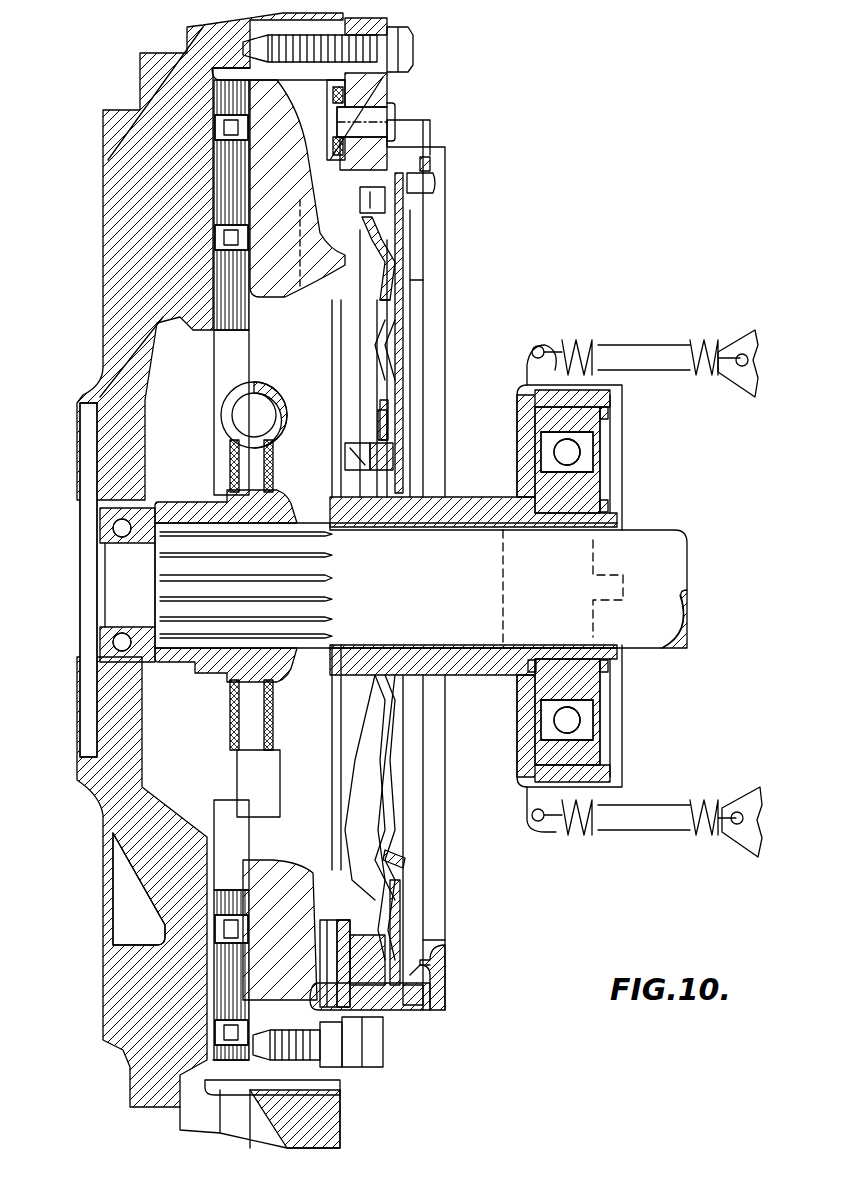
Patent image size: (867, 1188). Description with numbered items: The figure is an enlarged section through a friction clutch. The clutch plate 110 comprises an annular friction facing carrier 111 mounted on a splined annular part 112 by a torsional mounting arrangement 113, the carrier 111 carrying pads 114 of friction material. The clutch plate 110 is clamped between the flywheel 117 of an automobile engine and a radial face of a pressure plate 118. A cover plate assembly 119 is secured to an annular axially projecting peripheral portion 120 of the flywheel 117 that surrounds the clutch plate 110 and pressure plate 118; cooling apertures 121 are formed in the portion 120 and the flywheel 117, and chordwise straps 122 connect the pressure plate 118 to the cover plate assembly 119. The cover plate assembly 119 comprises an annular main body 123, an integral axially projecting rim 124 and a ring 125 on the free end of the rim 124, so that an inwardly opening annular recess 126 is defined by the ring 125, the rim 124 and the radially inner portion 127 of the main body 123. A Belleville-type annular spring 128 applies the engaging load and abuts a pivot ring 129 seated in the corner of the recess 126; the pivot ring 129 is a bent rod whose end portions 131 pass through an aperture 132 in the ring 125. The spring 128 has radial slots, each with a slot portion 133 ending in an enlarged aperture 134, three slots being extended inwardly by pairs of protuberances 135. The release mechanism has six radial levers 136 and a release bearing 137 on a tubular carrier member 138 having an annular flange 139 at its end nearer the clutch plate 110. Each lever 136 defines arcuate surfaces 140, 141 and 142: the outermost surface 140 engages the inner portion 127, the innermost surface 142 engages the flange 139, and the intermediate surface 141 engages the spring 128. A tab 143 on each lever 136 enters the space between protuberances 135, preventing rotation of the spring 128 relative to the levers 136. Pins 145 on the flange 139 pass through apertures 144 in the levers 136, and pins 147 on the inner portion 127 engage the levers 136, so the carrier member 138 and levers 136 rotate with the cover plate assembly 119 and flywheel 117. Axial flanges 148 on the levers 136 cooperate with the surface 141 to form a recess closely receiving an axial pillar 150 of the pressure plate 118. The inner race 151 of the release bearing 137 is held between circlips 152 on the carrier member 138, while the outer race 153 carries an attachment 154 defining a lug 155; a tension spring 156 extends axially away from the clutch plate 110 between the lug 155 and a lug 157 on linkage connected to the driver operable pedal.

The clutch plate 110 is at (204, 258).
The annular friction facing carrier 111 is at (225, 172).
The splined annular part 112 is at (220, 510).
The torsional mounting arrangement 113 is at (212, 420).
The pads of friction material 114 is at (240, 225).
The flywheel 117 is at (115, 452).
The pressure plate 118 is at (305, 290).
The cover plate assembly 119 is at (440, 1000).
The annular axially-projecting peripheral portion 120 is at (375, 1118).
The cooling apertures 121 is at (140, 838).
The straps 122 is at (355, 1068).
The annular main body 123 is at (370, 1105).
The annular rim 124 is at (395, 1010).
The ring 125 is at (430, 968).
The annular recess 126 is at (445, 942).
The radially inner portion 127 is at (360, 935).
The annular spring 128 is at (397, 895).
The pivot ring 129 is at (420, 992).
The end portions 131 is at (425, 185).
The aperture 132 is at (430, 165).
The slot portion 133 is at (400, 285).
The enlarged aperture 134 is at (420, 255).
The protuberances 135 is at (410, 305).
The levers 136 is at (390, 425).
The release bearing 137 is at (626, 464).
The tubular carrier member 138 is at (480, 670).
The annular flange 139 is at (347, 456).
The radially outermost arcuate surface 140 is at (380, 230).
The intermediate arcuate surface 141 is at (415, 295).
The radially innermost arcuate surface 142 is at (395, 458).
The tab 143 is at (400, 340).
The aperture 144 is at (378, 428).
The pins 145 is at (365, 478).
The pins 147 is at (388, 208).
The flanges 148 is at (365, 376).
The pillar 150 is at (360, 320).
The inner race 151 is at (585, 488).
The circlips 152 is at (530, 690).
The outer race 153 is at (580, 426).
The attachment 154 is at (575, 358).
The lug 155 is at (530, 365).
The tension spring 156 is at (688, 350).
The lug 157 is at (740, 352).